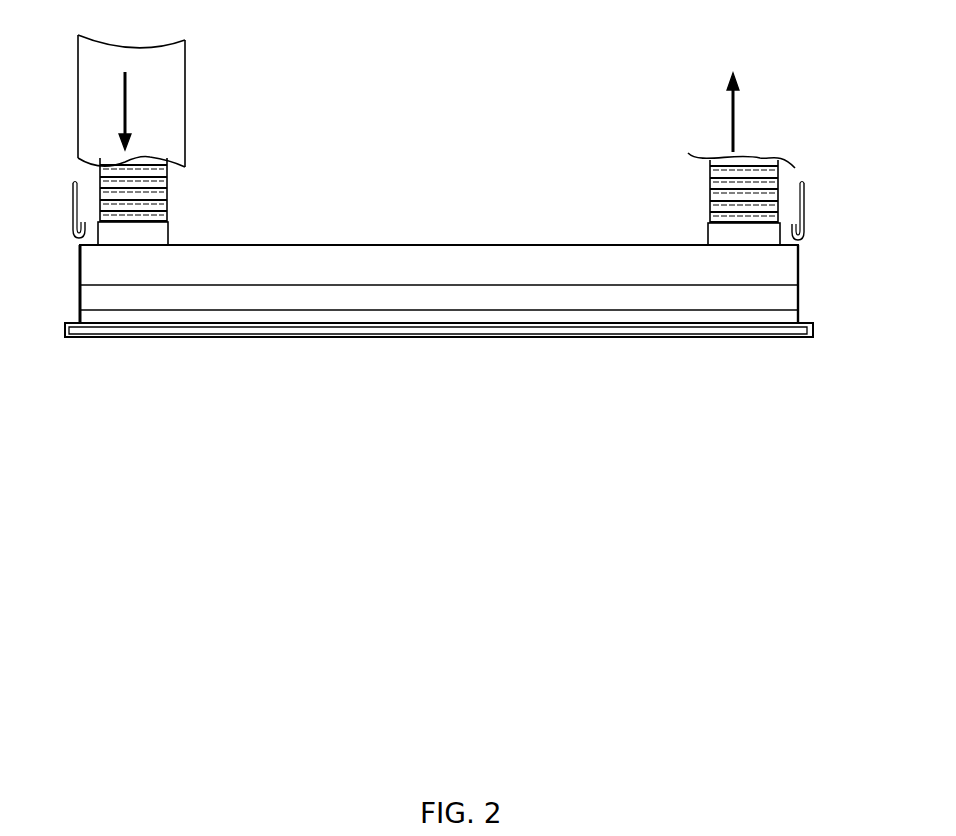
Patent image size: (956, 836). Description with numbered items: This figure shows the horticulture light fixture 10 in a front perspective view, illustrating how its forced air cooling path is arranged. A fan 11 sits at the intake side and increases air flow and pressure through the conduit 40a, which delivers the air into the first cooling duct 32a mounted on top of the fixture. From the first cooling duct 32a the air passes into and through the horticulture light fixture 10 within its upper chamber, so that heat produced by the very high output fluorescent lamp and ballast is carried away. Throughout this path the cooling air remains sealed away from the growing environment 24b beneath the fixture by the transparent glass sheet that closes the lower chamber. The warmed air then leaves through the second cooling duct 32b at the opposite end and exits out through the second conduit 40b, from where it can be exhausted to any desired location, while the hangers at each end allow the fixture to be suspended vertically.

The horticulture light fixture 10 is at (462, 183).
The fan 11 is at (189, 90).
The growing environment 24b is at (441, 337).
The first cooling duct 32a is at (170, 233).
The second cooling duct 32b is at (707, 234).
The conduit 40a is at (168, 182).
The second conduit 40b is at (709, 184).